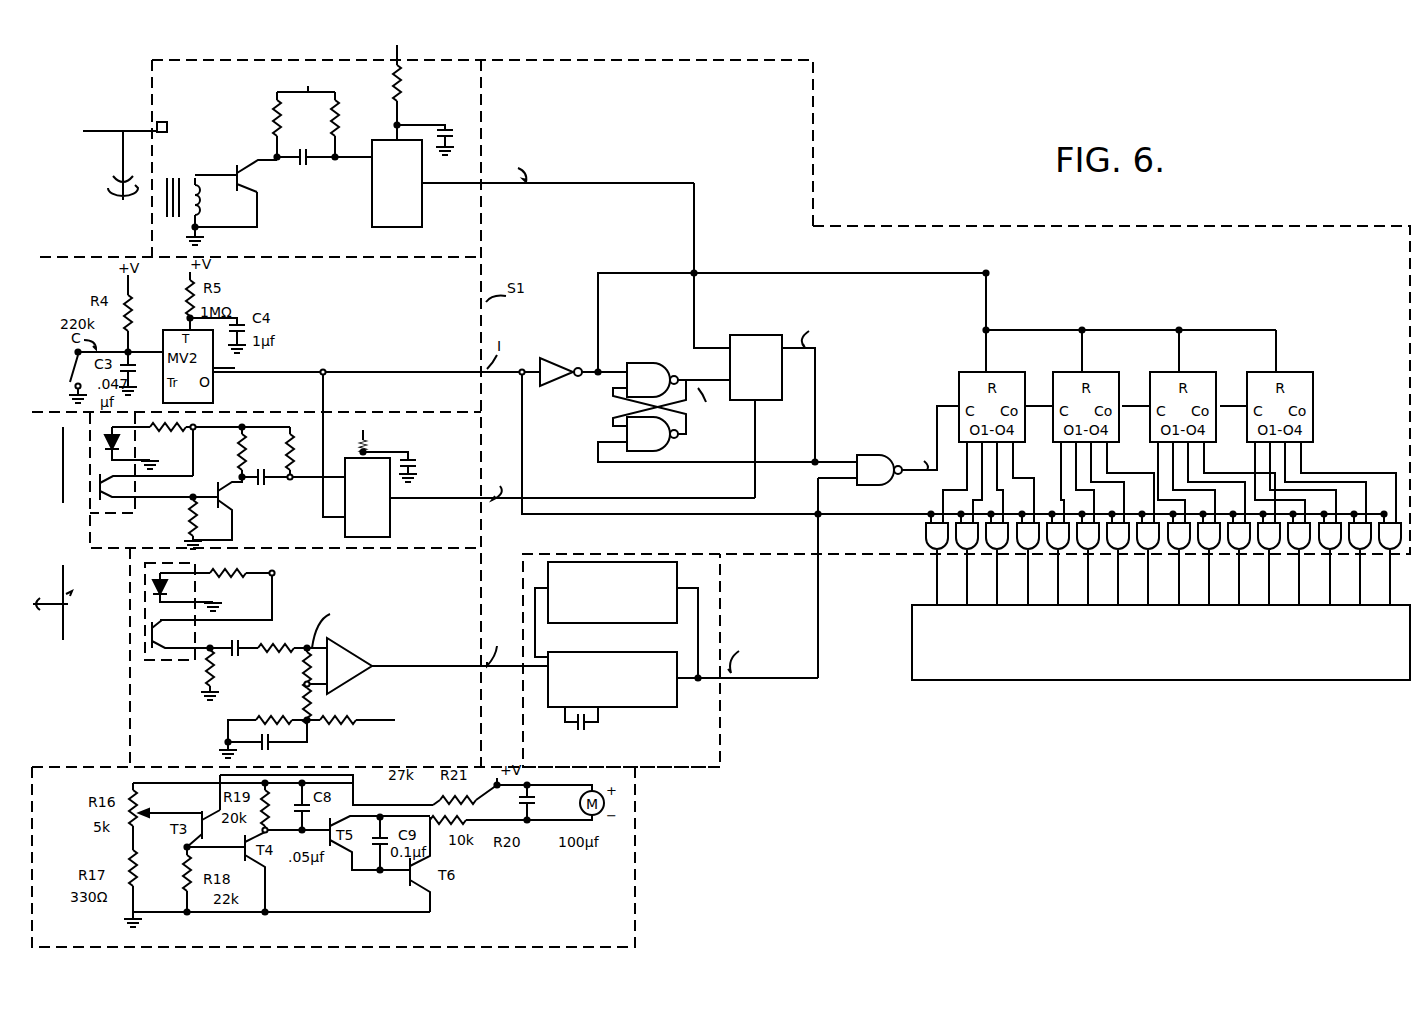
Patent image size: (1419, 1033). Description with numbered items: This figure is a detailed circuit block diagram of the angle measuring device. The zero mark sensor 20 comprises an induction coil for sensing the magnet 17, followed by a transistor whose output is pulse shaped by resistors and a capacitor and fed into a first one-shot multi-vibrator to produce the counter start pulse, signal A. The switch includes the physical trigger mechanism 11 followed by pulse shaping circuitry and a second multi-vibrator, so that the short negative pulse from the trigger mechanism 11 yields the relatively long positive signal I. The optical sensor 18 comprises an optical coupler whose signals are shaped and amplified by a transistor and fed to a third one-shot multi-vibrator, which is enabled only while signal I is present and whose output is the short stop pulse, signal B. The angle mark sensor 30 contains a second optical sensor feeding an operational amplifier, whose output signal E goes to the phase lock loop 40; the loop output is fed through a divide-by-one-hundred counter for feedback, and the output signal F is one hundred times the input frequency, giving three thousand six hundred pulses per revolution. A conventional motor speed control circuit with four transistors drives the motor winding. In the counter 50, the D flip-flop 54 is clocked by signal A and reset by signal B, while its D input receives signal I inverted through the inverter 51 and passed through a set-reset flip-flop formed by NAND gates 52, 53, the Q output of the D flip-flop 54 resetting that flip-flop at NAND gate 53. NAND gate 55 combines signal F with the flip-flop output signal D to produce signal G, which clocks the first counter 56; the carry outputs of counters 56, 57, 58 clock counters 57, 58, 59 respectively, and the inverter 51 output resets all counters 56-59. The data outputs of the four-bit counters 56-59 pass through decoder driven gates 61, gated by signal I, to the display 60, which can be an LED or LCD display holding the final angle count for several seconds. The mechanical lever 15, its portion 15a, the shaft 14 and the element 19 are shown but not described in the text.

The trigger mechanism 11 is at (72, 368).
The shaft 14 is at (116, 165).
The lever arm 15 is at (96, 130).
The arm portion 15a is at (66, 594).
The magnet 17 is at (177, 116).
The optical sensor 18 is at (62, 460).
The photo-sensing circuit 19 is at (480, 441).
The zero mark sensor 20 is at (486, 102).
The angle mark sensor 30 is at (481, 590).
The phase lock loop 40 is at (612, 554).
The counter 50 is at (1378, 226).
The inverter 51 is at (556, 356).
The NAND gate 52 is at (639, 359).
The NAND gate 53 is at (670, 442).
The D flip-flop 54 is at (742, 336).
The NAND gate 55 is at (874, 455).
The counter 56 is at (962, 374).
The counter 57 is at (1056, 374).
The counter 58 is at (1153, 374).
The counter 59 is at (1250, 374).
The display 60 is at (912, 647).
The decoder driven gates 61 is at (964, 546).